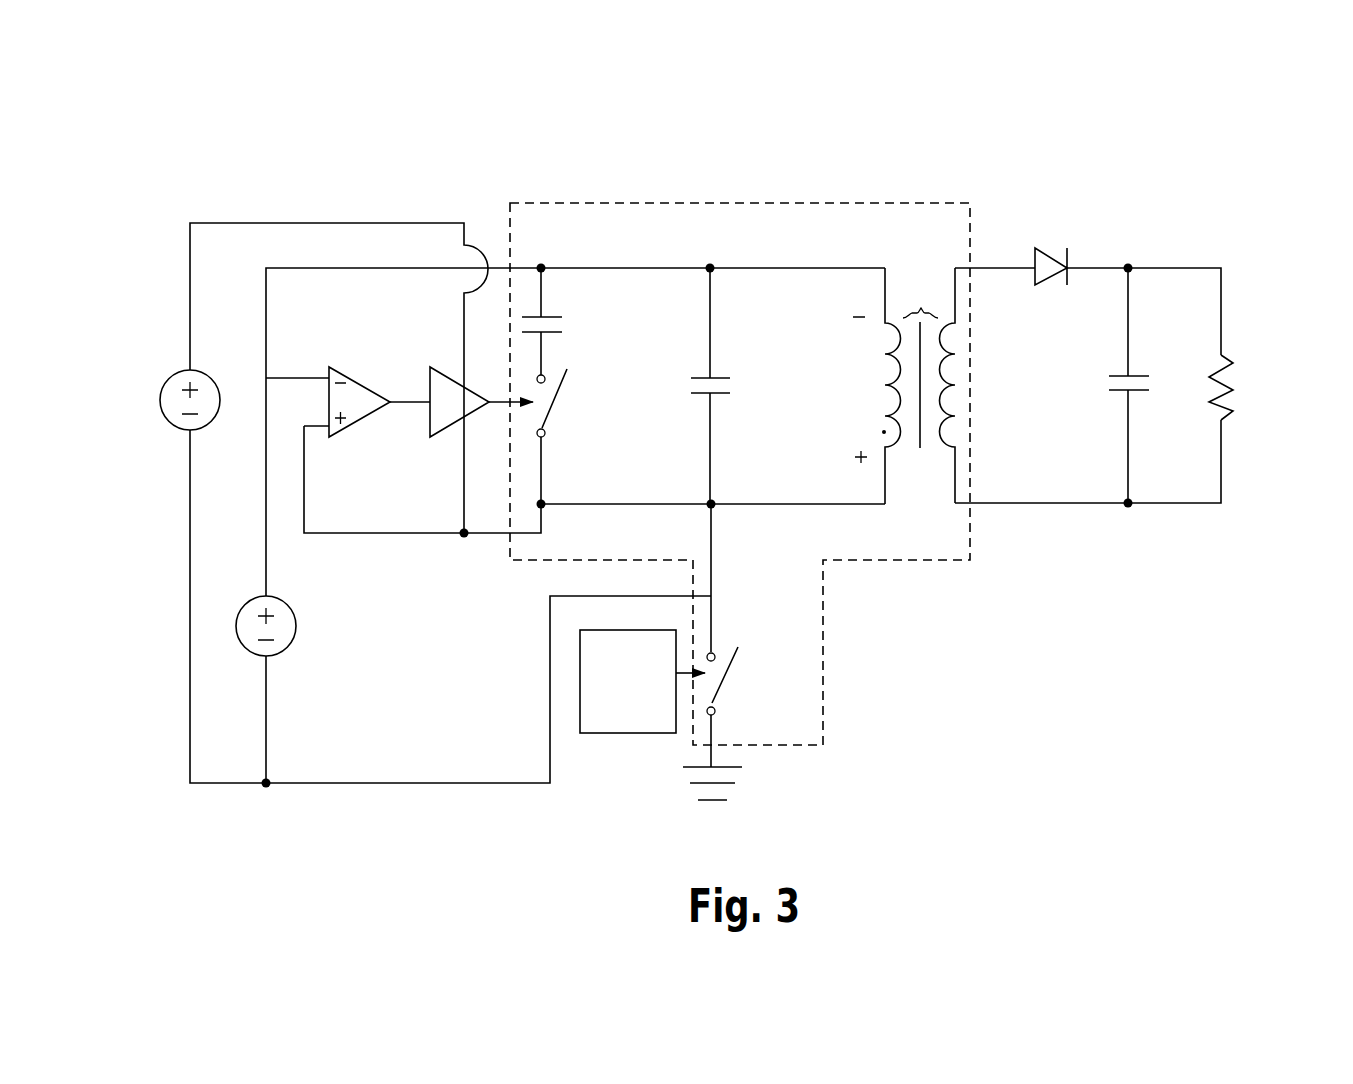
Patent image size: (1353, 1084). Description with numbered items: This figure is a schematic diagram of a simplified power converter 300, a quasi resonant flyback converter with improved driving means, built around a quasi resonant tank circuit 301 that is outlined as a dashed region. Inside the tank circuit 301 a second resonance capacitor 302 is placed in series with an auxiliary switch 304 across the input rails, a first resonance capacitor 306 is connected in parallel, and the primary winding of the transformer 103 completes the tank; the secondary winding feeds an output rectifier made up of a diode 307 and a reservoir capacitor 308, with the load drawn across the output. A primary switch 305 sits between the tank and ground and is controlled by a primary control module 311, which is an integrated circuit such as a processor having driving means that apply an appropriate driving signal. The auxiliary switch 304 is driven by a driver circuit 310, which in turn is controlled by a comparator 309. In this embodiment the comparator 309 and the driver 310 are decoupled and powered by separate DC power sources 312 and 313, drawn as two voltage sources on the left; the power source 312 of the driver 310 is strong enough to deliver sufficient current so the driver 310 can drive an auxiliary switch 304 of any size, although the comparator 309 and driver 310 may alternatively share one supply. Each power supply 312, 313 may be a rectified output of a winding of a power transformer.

The power converter 300 is at (1127, 157).
The quasi resonant tank circuit 301 is at (896, 203).
The second resonance capacitor 302 is at (562, 334).
The auxiliary switch 304 is at (553, 396).
The primary switch 305 is at (724, 672).
The first resonance capacitor 306 is at (730, 394).
The diode 307 is at (1034, 252).
The reservoir capacitor 308 is at (1109, 392).
The comparator 309 is at (375, 413).
The driver circuit 310 is at (473, 413).
The primary control module 311 is at (642, 681).
The DC power source 312 is at (205, 428).
The DC power source 313 is at (283, 650).
The transformer 103 is at (921, 308).